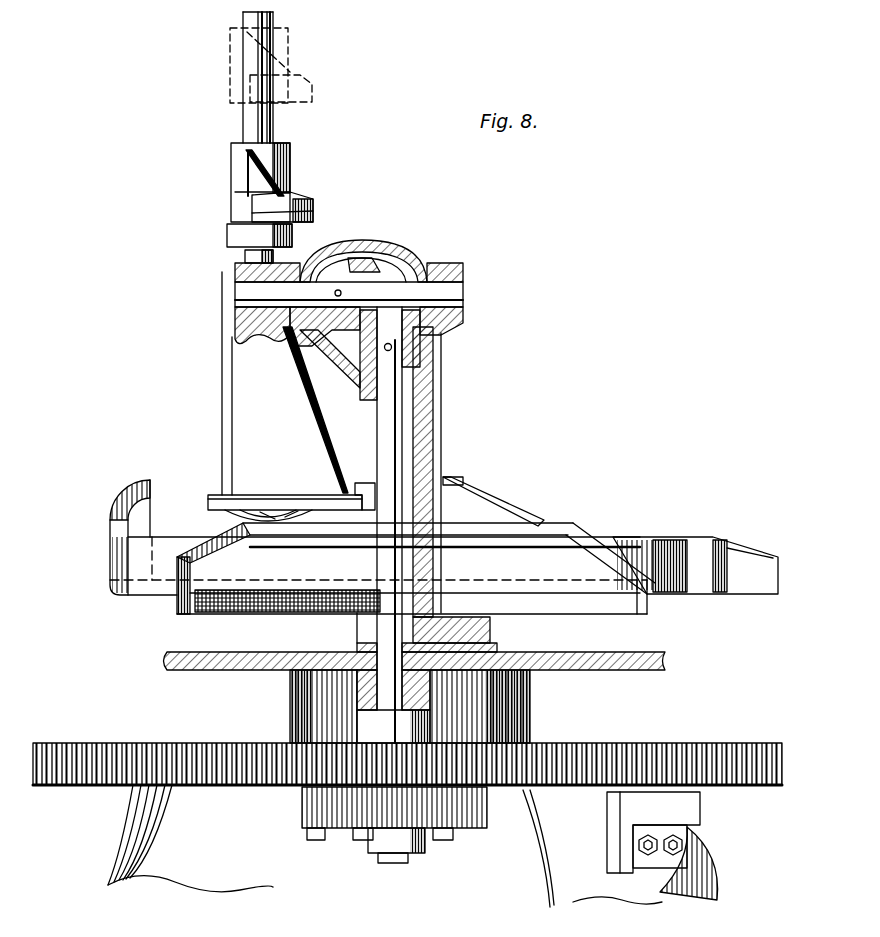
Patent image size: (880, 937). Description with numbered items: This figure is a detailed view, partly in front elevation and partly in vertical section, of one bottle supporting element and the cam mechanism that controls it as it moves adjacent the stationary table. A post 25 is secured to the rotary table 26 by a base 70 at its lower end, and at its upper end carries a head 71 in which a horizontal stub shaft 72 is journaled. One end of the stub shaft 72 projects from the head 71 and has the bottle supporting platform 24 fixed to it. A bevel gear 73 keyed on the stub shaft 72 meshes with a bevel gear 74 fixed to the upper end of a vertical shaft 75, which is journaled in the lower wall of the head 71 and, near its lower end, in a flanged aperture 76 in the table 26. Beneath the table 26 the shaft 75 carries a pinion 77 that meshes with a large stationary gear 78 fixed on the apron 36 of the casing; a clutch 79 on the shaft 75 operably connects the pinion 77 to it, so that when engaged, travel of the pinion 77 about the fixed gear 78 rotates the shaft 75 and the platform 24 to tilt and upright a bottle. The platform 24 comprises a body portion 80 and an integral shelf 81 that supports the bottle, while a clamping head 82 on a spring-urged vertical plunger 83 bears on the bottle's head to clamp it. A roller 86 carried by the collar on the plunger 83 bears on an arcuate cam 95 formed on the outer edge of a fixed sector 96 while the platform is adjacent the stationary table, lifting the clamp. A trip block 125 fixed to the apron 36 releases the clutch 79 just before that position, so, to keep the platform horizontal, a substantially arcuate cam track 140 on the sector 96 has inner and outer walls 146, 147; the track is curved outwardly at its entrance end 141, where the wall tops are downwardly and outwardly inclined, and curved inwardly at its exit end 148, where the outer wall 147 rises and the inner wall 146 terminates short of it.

The plunger 83 is at (247, 118).
The clamping head 82 is at (300, 198).
The bevel gear 73 is at (352, 253).
The head 71 is at (406, 244).
The stub shaft 72 is at (455, 291).
The body portion 80 is at (233, 340).
The shelf 81 is at (218, 492).
The bevel gear 74 is at (421, 347).
The post 25 is at (432, 432).
The vertical shaft 75 is at (398, 483).
The bottle supporting platform 24 is at (308, 502).
The roller 86 is at (243, 512).
The arcuate cam 95 is at (484, 523).
The sector 96 is at (471, 503).
The cam track 140 is at (620, 537).
The entrance end 141 is at (678, 534).
The inner wall 146 is at (748, 558).
The outer wall 147 is at (111, 584).
The exit end 148 is at (118, 518).
The base 70 is at (491, 627).
The rotary table 26 is at (548, 656).
The flanged aperture 76 is at (431, 694).
The stationary gear 78 is at (603, 745).
The pinion 77 is at (333, 762).
The clutch 79 is at (457, 829).
The apron 36 is at (202, 852).
The trip block 125 is at (688, 811).